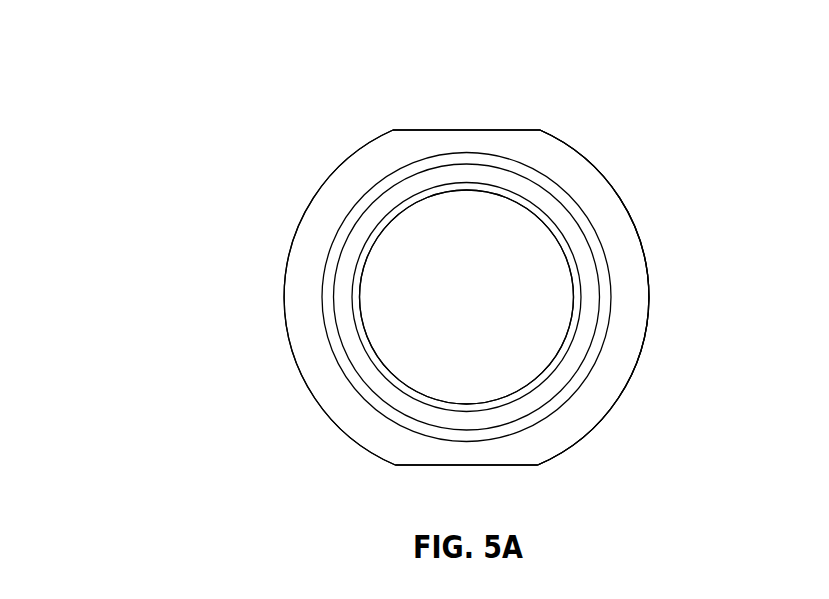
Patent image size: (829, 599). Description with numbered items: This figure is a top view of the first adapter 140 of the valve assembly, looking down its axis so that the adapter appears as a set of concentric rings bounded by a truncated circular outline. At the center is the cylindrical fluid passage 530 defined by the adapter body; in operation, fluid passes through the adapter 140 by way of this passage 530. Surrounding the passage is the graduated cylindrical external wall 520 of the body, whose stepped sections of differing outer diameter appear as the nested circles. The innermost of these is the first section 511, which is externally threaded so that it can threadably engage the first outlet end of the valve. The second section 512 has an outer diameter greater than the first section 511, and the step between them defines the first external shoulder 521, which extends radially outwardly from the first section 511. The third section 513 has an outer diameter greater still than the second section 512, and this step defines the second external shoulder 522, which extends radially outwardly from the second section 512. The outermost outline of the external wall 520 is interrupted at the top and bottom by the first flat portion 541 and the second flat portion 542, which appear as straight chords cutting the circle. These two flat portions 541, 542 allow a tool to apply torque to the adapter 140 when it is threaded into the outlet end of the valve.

The first adapter 140 is at (215, 38).
The first section 511 is at (562, 199).
The second section 512 is at (598, 230).
The third section 513 is at (650, 266).
The graduated cylindrical external wall 520 is at (320, 410).
The first external shoulder 521 is at (330, 263).
The second external shoulder 522 is at (332, 193).
The cylindrical fluid passage 530 is at (485, 279).
The first flat portion 541 is at (418, 129).
The second flat portion 542 is at (422, 466).